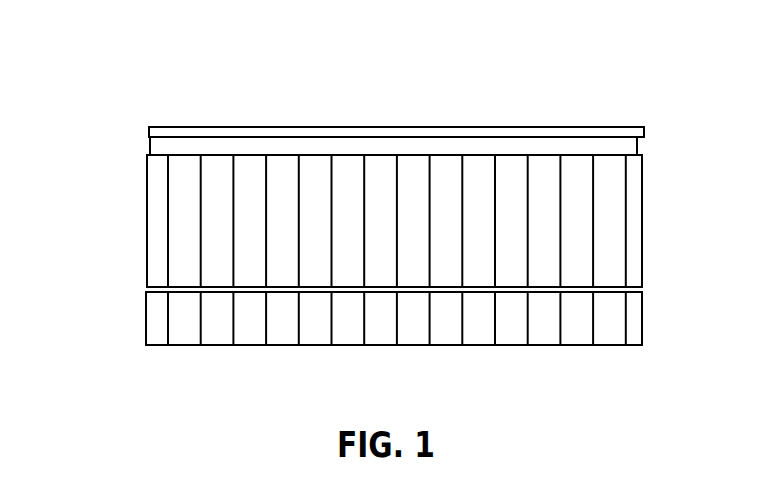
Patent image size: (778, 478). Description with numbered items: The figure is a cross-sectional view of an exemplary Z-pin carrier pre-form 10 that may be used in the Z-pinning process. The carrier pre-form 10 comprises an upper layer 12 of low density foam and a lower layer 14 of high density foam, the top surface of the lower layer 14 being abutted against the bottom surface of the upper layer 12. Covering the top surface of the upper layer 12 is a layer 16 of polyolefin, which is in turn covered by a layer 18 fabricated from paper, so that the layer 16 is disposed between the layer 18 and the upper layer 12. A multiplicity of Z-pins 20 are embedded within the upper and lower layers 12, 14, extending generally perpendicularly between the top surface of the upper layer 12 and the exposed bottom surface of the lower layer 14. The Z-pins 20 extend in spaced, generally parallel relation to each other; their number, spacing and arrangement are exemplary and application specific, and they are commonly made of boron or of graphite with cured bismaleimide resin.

The Z-pin carrier pre-form 10 is at (136, 78).
The upper layer 12 is at (615, 200).
The lower layer 14 is at (445, 338).
The layer of polyolefin 16 is at (556, 147).
The layer of paper 18 is at (190, 127).
The Z-pins 20 is at (233, 236).